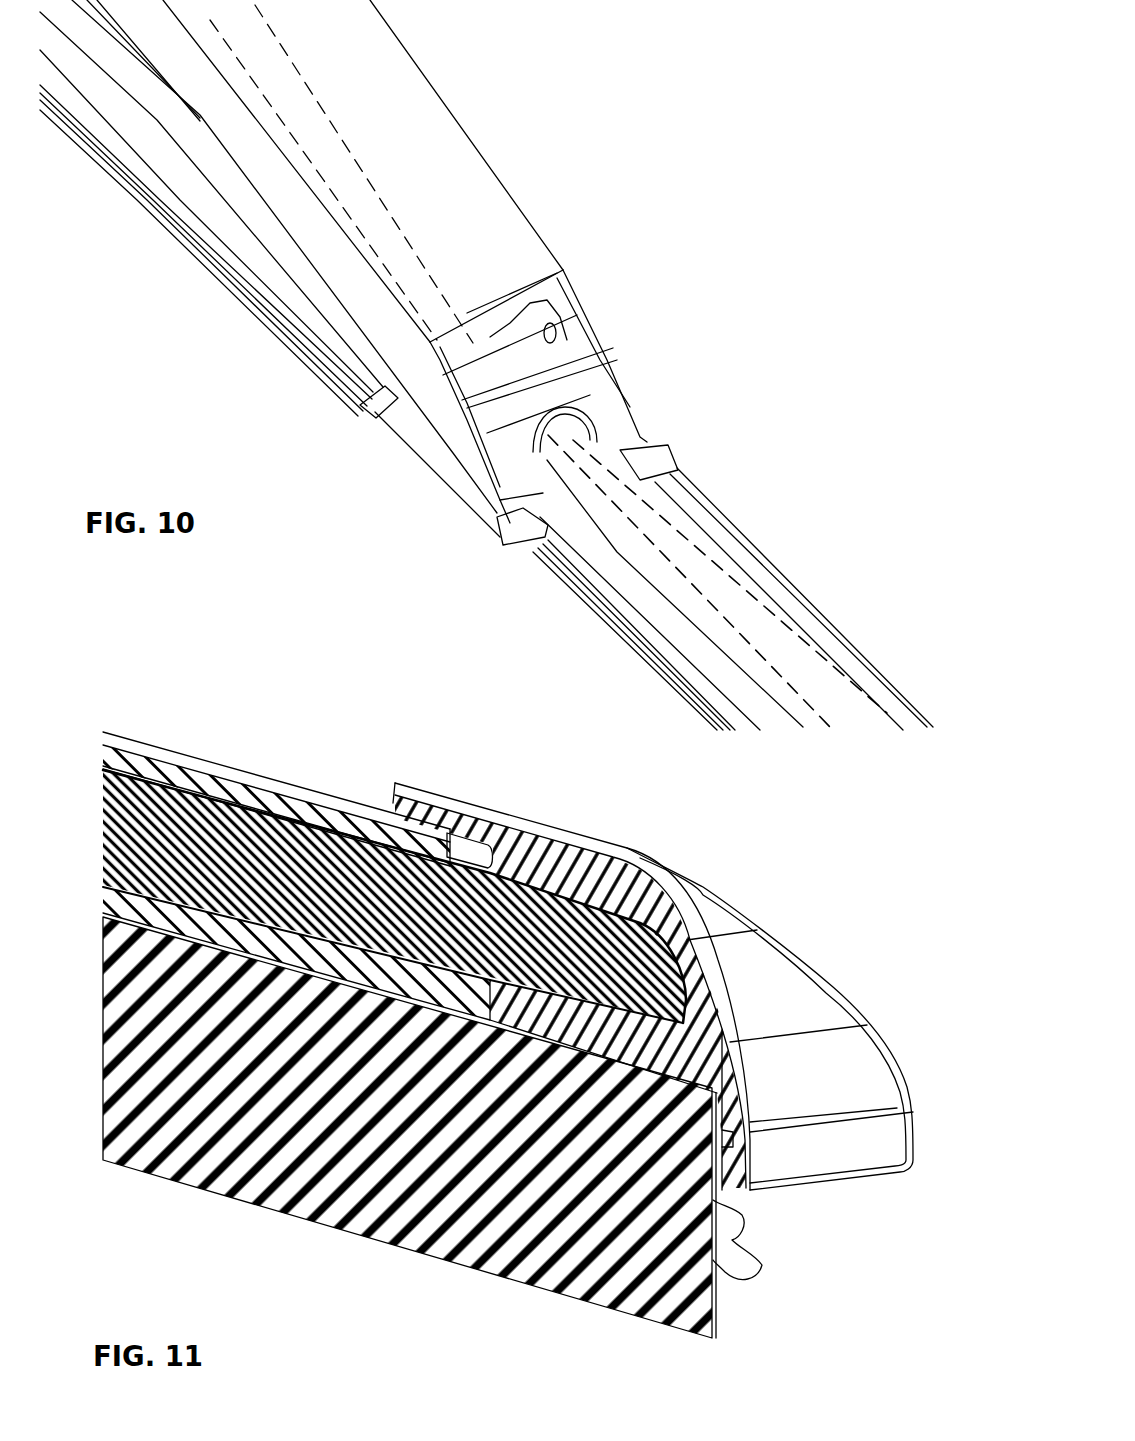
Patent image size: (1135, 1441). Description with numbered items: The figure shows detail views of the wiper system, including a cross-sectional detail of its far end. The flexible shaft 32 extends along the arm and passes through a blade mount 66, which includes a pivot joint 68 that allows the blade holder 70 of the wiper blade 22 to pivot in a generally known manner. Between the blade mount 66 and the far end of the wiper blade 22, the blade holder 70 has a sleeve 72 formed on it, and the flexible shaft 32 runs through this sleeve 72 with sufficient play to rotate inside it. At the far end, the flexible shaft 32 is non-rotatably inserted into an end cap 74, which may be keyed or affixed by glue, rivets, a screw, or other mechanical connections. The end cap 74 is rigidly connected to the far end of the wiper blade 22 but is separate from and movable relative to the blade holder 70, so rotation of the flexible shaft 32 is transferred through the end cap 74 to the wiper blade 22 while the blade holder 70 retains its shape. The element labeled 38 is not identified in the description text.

In FIG. 11, the wiper blade 22 is at (720, 1253).
In FIG. 10, the flexible shaft 32 is at (442, 277).
In FIG. 11, the flexible shaft 32 is at (248, 857).
In FIG. 10, the strip 38 is at (428, 140).
In FIG. 10, the blade mount 66 is at (607, 385).
In FIG. 10, the pivot joint 68 is at (450, 457).
In FIG. 10, the blade holder 70 is at (277, 277).
In FIG. 11, the blade holder 70 is at (165, 757).
In FIG. 10, the sleeve 72 is at (710, 553).
In FIG. 11, the end cap 74 is at (800, 1055).